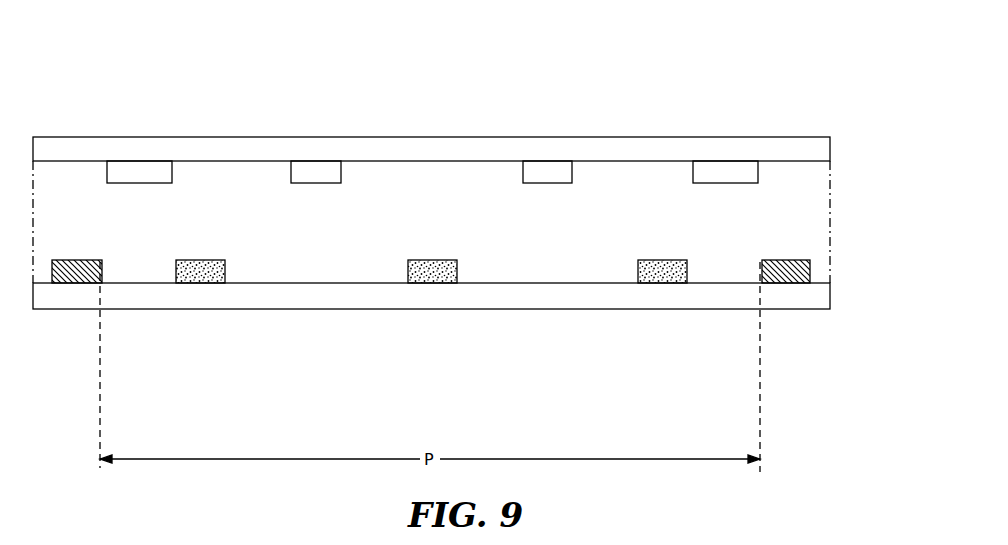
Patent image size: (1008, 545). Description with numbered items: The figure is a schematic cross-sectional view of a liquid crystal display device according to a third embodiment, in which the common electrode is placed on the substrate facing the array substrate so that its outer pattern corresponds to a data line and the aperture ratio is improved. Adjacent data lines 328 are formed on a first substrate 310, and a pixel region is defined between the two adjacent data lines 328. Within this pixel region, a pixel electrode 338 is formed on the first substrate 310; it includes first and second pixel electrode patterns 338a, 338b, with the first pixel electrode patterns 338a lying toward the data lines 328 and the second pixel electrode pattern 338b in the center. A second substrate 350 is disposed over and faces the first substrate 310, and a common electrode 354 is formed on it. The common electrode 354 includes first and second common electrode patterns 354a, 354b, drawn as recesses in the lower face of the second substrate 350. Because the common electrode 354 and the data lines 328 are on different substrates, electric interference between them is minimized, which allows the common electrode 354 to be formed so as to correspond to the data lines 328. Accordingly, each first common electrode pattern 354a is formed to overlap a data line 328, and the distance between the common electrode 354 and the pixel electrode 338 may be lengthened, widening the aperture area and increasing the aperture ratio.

The second substrate 350 is at (820, 151).
The first substrate 310 is at (820, 302).
The common electrode 354 is at (432, 98).
The first common electrode pattern 354a is at (145, 175).
The second common electrode pattern 354b is at (433, 130).
The data line 328 is at (72, 272).
The pixel electrode 338 is at (431, 347).
The first pixel electrode pattern 338a is at (206, 272).
The second pixel electrode pattern 338b is at (433, 317).